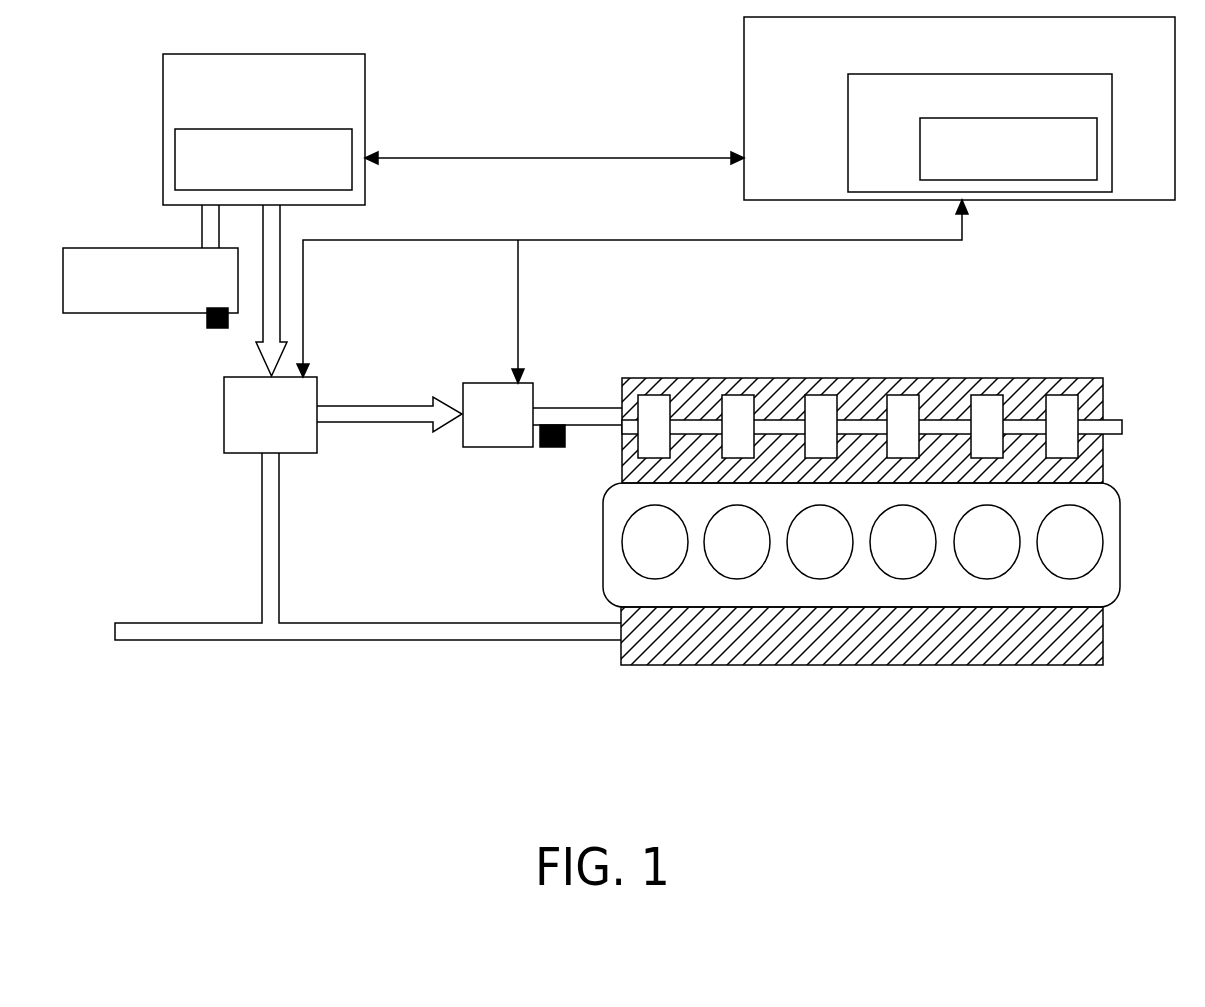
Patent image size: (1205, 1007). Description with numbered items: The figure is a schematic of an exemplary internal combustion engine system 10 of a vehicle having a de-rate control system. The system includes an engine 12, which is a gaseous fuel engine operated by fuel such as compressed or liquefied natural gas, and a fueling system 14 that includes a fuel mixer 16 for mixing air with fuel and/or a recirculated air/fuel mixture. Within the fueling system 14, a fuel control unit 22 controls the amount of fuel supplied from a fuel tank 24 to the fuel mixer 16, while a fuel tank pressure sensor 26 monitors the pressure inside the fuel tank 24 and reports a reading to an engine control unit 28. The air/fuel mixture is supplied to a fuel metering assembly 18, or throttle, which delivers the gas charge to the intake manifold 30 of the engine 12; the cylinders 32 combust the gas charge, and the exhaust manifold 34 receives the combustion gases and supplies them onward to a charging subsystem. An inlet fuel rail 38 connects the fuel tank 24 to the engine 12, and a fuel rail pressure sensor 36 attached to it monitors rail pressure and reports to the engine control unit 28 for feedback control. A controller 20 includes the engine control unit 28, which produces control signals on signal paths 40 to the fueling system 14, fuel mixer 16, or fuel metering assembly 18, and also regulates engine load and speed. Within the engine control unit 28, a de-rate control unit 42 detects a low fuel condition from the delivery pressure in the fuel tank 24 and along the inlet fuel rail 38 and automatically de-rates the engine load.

The internal combustion engine system 10 is at (92, 189).
The engine 12 is at (862, 485).
The fueling system 14 is at (365, 80).
The fuel mixer 16 is at (224, 390).
The fuel metering assembly 18 is at (502, 383).
The controller 20 is at (744, 103).
The fuel control unit 22 is at (303, 129).
The fuel tank 24 is at (90, 248).
The fuel tank pressure sensor 26 is at (207, 319).
The engine control unit 28 is at (848, 125).
The intake manifold 30 is at (877, 378).
The cylinders 32 is at (985, 577).
The exhaust manifold 34 is at (773, 665).
The fuel rail pressure sensor 36 is at (547, 447).
The inlet fuel rail 38 is at (393, 406).
The signal paths 40 is at (523, 158).
The de-rate control unit 42 is at (920, 157).